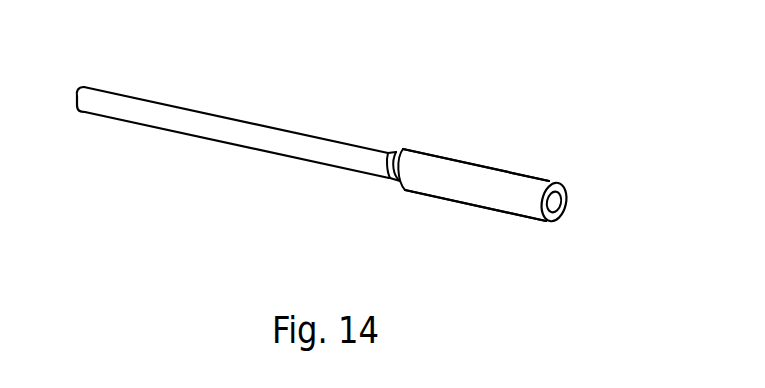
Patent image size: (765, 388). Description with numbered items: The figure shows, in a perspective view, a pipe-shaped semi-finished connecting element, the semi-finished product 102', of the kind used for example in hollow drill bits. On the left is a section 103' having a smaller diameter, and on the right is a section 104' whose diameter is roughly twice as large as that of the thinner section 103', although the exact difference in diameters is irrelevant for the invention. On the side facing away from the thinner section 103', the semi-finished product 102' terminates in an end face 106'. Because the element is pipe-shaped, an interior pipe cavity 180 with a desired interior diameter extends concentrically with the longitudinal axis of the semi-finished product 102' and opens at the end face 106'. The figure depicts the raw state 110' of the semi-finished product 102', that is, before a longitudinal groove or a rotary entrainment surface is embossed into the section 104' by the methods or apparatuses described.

The semi-finished product 102' is at (505, 84).
The section having a smaller diameter 103' is at (233, 107).
The section 104' is at (476, 216).
The end face 106' is at (574, 237).
The raw state 110' is at (487, 152).
The interior pipe cavity 180 is at (555, 201).